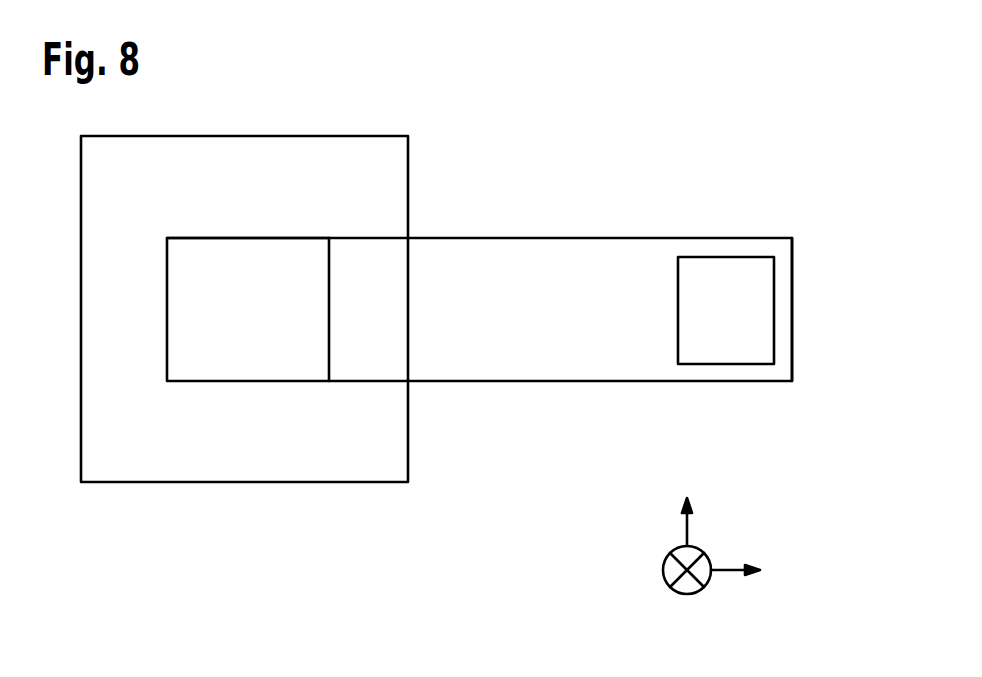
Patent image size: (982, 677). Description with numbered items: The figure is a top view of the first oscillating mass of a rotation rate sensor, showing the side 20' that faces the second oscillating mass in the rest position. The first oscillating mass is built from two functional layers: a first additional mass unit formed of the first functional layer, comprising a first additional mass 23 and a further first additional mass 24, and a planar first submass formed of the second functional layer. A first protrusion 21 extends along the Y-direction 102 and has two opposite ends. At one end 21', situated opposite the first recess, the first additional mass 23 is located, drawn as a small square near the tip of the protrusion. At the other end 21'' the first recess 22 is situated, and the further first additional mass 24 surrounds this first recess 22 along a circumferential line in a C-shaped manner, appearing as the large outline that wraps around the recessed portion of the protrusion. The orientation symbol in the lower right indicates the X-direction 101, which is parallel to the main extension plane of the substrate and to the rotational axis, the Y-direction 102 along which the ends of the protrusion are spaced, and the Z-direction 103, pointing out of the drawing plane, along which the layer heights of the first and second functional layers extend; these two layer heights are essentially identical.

The side 20' is at (499, 354).
The first protrusion 21 is at (479, 268).
The end 21' is at (812, 268).
The end 21'' is at (283, 395).
The first recess 22 is at (270, 270).
The first additional mass 23 is at (716, 290).
The further first additional mass 24 is at (347, 447).
The X-direction 101 is at (660, 513).
The Y-direction 102 is at (751, 590).
The Z-direction 103 is at (665, 583).